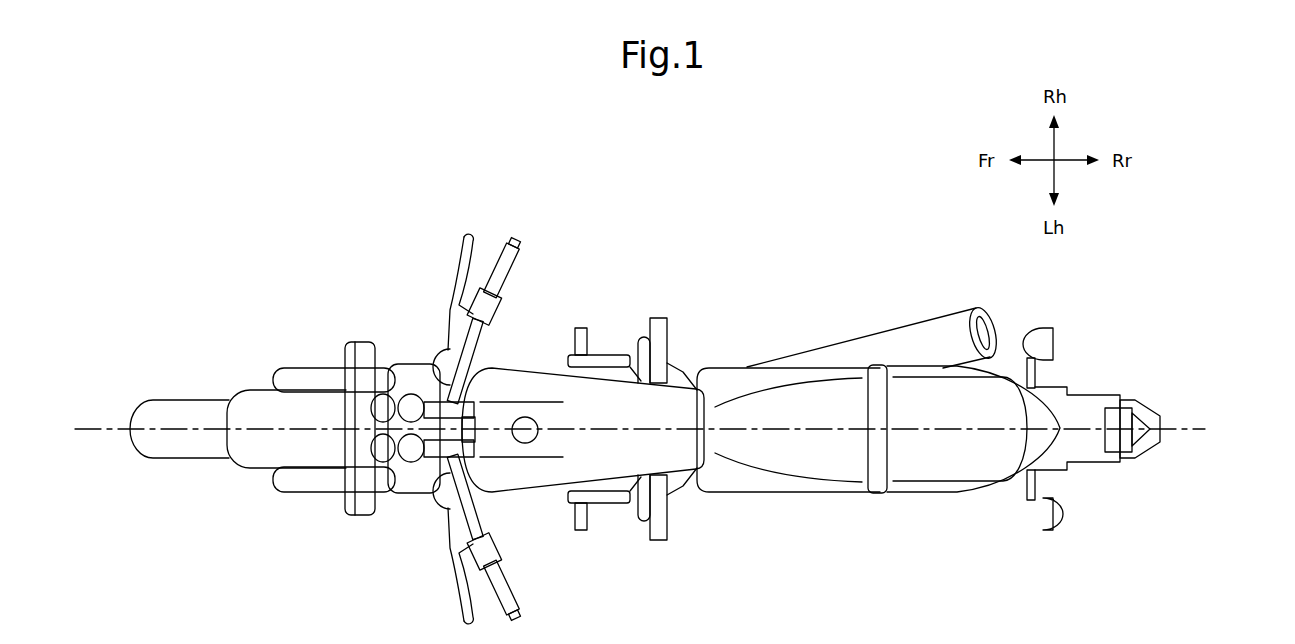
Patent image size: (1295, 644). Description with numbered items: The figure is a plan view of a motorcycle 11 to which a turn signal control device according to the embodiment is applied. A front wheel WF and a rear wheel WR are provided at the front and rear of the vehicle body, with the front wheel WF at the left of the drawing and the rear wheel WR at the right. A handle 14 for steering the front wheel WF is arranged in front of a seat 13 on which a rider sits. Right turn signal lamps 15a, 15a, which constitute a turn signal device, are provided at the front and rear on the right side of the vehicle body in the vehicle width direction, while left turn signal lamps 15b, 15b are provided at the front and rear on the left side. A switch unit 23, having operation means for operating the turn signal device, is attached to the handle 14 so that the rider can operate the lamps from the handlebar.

The motorcycle 11 is at (722, 314).
The seat 13 is at (612, 395).
The handle 14 is at (508, 275).
The switch unit 23 is at (498, 318).
The right turn signal lamps 15a is at (333, 357).
The left turn signal lamps 15b is at (343, 501).
The front wheel WF is at (177, 450).
The rear wheel WR is at (1087, 464).